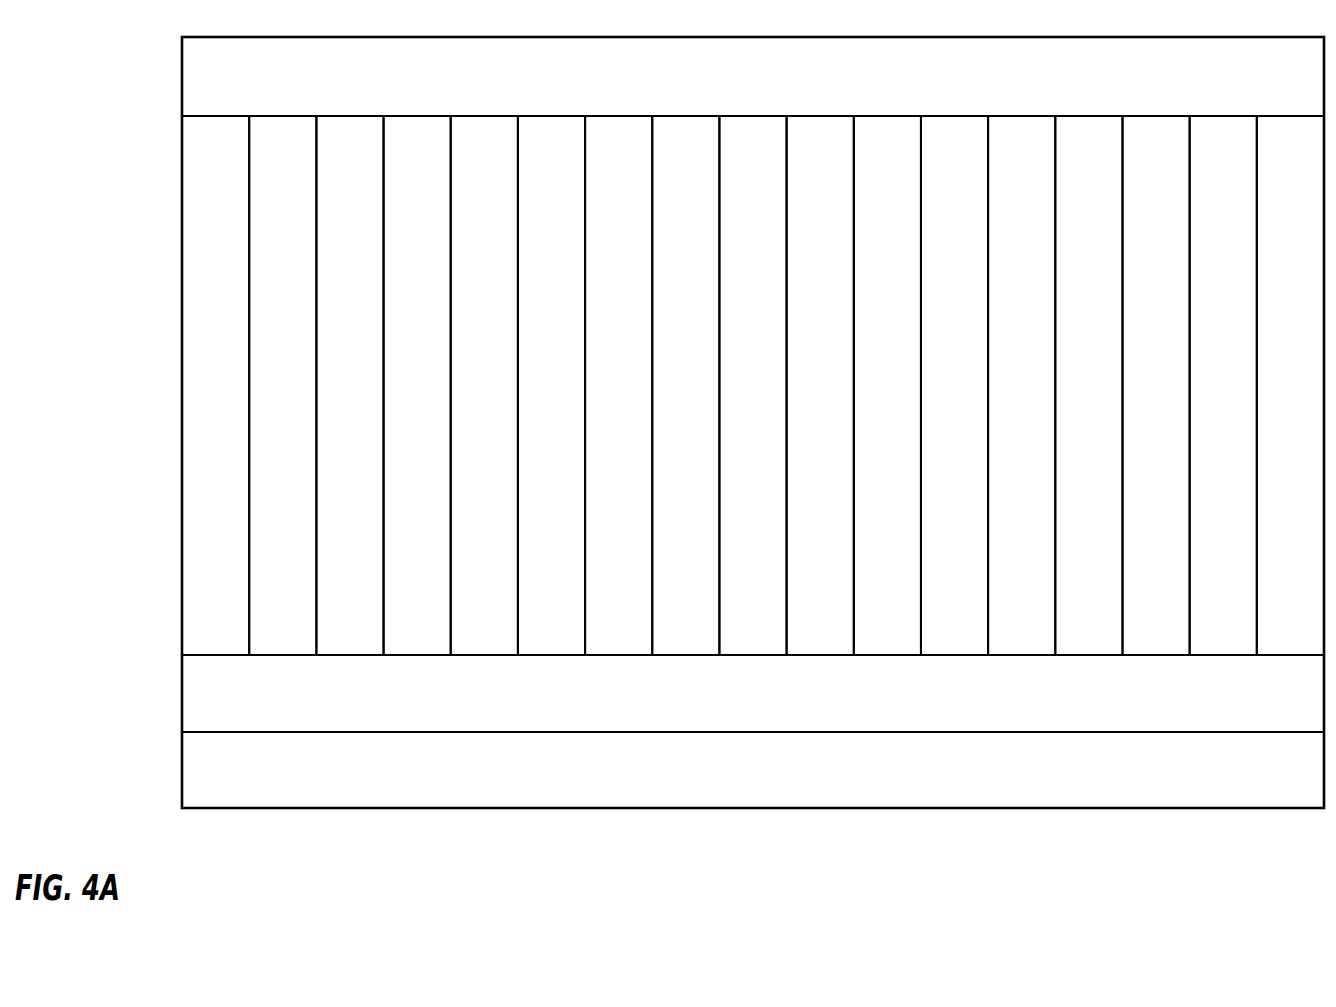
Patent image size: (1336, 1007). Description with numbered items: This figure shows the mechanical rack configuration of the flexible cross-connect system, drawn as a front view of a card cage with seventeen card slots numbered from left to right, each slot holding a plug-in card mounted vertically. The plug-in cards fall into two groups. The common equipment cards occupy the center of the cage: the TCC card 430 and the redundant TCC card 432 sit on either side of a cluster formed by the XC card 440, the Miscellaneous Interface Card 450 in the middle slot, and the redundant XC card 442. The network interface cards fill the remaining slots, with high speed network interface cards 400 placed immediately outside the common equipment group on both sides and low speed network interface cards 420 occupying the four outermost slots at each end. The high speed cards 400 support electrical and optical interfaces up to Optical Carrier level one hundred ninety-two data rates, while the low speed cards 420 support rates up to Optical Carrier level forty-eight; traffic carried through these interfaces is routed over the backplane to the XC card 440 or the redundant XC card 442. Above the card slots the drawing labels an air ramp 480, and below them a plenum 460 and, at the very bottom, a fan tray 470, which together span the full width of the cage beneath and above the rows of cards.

The high speed network interface card 400 is at (492, 138).
The low speed network interface card 420 is at (224, 633).
The TCC card 430 is at (627, 138).
The redundant TCC card 432 is at (895, 138).
The XC card 440 is at (694, 138).
The redundant XC card 442 is at (828, 138).
The Miscellaneous Interface Card (MIC) 450 is at (761, 138).
The plenum 460 is at (183, 706).
The fan tray 470 is at (183, 781).
The air ramp 480 is at (183, 50).